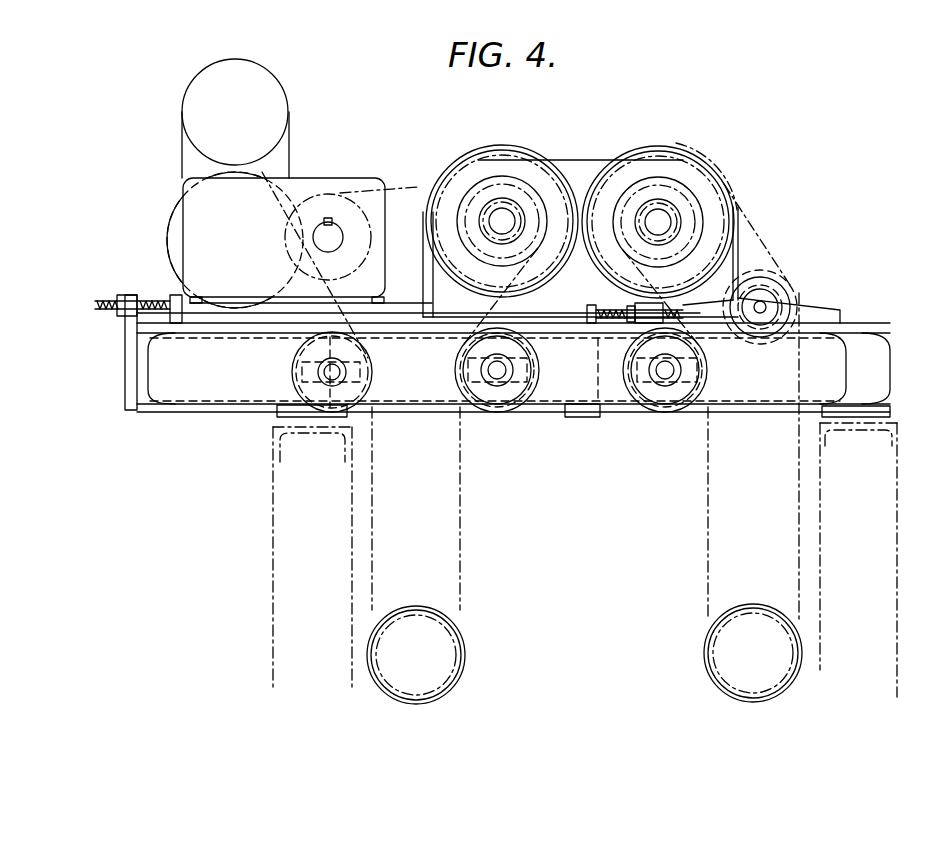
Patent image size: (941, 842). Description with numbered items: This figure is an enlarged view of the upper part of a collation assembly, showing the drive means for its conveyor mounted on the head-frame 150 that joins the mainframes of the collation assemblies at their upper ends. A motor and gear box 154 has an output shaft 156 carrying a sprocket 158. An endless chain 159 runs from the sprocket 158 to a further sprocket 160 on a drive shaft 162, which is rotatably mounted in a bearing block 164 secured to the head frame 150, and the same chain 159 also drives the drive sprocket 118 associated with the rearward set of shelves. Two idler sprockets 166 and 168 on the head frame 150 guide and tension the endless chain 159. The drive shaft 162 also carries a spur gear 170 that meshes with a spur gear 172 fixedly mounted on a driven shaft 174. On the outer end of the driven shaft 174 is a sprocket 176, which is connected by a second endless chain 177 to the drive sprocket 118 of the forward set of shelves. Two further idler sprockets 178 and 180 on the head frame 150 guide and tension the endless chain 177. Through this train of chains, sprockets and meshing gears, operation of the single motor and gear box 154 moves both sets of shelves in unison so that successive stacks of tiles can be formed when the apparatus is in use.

The drive sprocket 118 is at (447, 657).
The head-frame 150 is at (830, 363).
The motor and gear box 154 is at (340, 120).
The output shaft 156 is at (337, 228).
The sprocket 158 is at (300, 207).
The endless chain 159 is at (418, 187).
The further sprocket 160 is at (520, 195).
The drive shaft 162 is at (500, 215).
The bearing block 164 is at (580, 165).
The idler sprocket 166 is at (313, 355).
The idler sprocket 168 is at (477, 392).
The spur gear 170 is at (472, 150).
The spur gear 172 is at (642, 143).
The driven shaft 174 is at (660, 222).
The sprocket 176 is at (668, 192).
The endless chain 177 is at (757, 250).
The idler sprocket 178 is at (663, 395).
The idler sprocket 180 is at (787, 285).